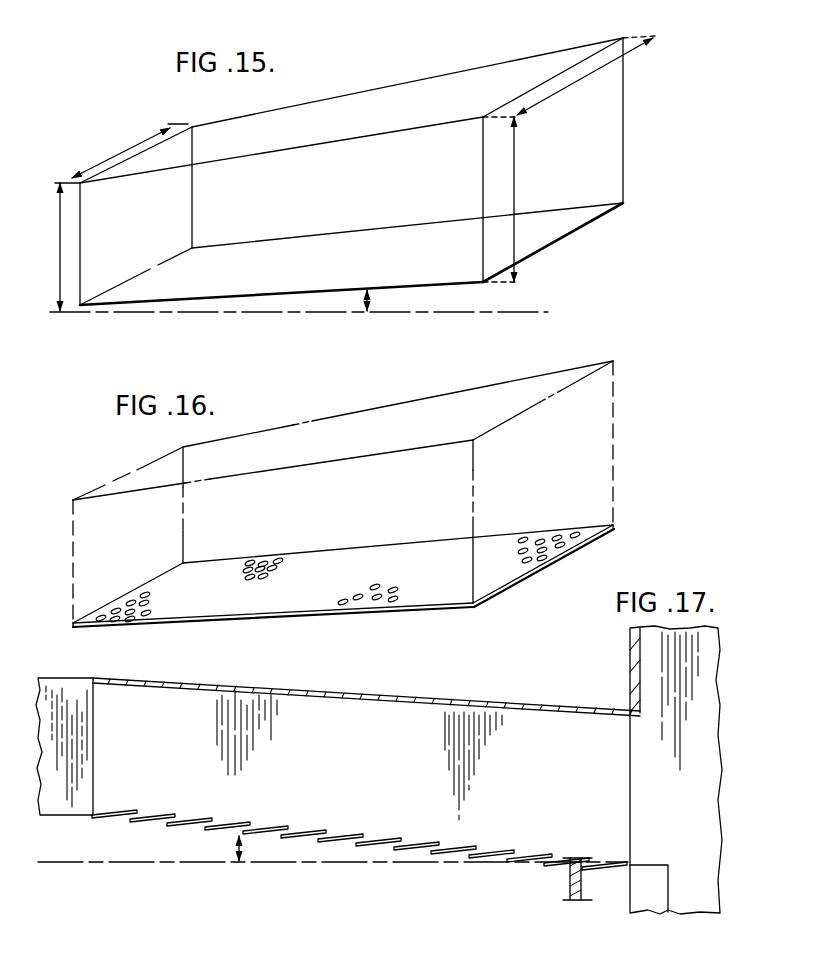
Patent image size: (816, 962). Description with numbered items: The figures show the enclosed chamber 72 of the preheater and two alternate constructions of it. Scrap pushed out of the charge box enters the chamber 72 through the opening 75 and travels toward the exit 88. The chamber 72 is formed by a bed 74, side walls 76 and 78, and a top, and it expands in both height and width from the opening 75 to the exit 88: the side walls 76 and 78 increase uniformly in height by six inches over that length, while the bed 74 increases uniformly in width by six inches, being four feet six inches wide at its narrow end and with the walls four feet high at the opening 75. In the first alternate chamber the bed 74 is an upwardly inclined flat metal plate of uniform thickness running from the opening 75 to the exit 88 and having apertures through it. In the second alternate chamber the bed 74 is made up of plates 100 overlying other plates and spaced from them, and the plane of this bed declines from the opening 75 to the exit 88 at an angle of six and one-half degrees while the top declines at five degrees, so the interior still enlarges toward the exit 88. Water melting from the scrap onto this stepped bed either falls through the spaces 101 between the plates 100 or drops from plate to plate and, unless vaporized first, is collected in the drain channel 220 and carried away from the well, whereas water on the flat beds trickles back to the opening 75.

In FIG. 15, the opening 75 is at (136, 216).
In FIG. 16, the opening 75 is at (98, 516).
In FIG. 17, the opening 75 is at (114, 777).
In FIG. 15, the side wall 76 is at (427, 71).
In FIG. 15, the side wall 78 is at (362, 257).
In FIG. 15, the exit 88 is at (574, 177).
In FIG. 16, the exit 88 is at (588, 466).
In FIG. 17, the exit 88 is at (611, 777).
In FIG. 16, the enclosed chamber 72 is at (552, 362).
In FIG. 17, the enclosed chamber 72 is at (530, 706).
In FIG. 16, the bed 74 is at (442, 605).
In FIG. 17, the bed 74 is at (359, 843).
In FIG. 17, the plates 100 is at (382, 844).
In FIG. 17, the spaces 101 is at (307, 842).
In FIG. 17, the drain channel 220 is at (562, 886).